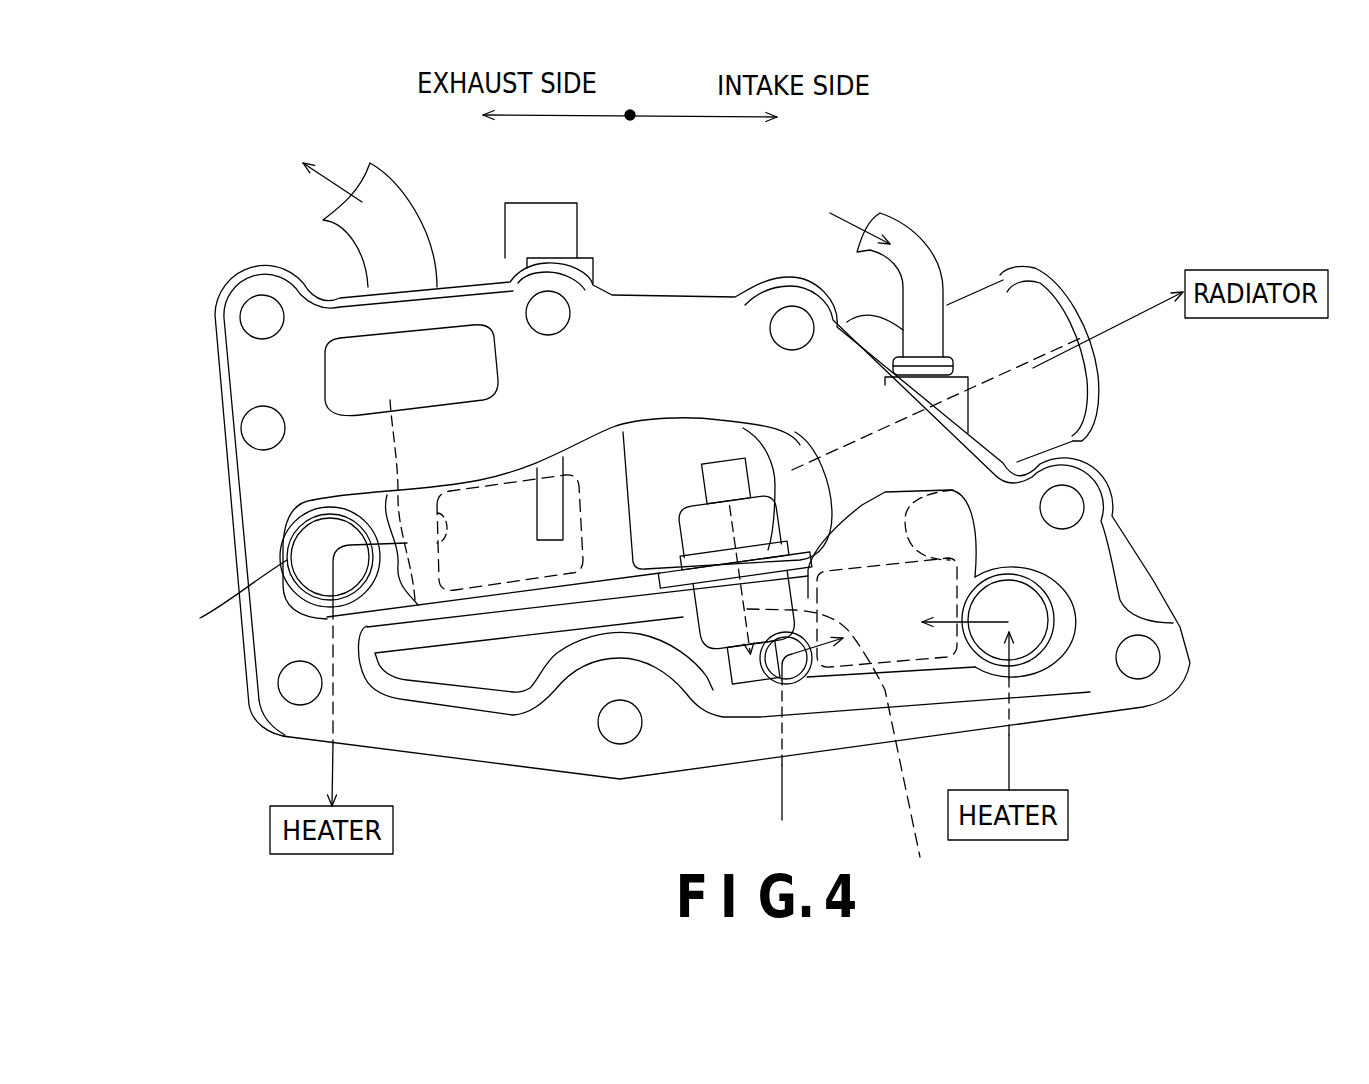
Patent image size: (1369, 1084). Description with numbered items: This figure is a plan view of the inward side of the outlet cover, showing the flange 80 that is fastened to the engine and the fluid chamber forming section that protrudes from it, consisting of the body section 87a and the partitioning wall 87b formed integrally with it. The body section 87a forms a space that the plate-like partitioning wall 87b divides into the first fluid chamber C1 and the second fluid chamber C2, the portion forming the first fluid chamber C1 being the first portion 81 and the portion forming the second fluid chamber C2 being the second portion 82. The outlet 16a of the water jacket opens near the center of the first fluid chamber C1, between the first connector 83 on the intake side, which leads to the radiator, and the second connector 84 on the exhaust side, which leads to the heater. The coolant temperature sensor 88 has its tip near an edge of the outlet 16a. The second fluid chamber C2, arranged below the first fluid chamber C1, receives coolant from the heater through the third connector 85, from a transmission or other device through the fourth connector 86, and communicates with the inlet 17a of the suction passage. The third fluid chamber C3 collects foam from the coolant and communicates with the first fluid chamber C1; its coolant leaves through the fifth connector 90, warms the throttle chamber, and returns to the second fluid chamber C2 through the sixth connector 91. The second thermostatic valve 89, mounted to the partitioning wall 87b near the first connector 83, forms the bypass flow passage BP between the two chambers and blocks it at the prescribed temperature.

The flange 80 is at (665, 327).
The first portion 81 is at (710, 407).
The second portion 82 is at (573, 722).
The first connector 83 is at (977, 313).
The second connector 84 is at (287, 567).
The third connector 85 is at (1050, 640).
The fourth connector 86 is at (800, 672).
The body section 87a is at (517, 447).
The partitioning wall 87b is at (462, 607).
The coolant temperature sensor 88 is at (550, 508).
The second thermostatic valve 89 is at (720, 672).
The fifth connector 90 is at (387, 202).
The sixth connector 91 is at (912, 247).
The first fluid chamber C1 is at (602, 465).
The second fluid chamber C2 is at (975, 565).
The third fluid chamber C3 is at (355, 372).
The outlet of the water jacket 16a is at (433, 506).
The inlet of the suction passage 17a is at (915, 497).
The bypass flow passage BP is at (850, 753).